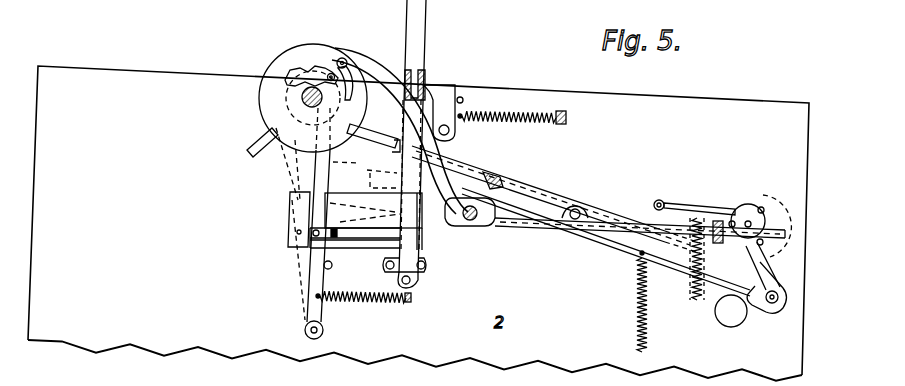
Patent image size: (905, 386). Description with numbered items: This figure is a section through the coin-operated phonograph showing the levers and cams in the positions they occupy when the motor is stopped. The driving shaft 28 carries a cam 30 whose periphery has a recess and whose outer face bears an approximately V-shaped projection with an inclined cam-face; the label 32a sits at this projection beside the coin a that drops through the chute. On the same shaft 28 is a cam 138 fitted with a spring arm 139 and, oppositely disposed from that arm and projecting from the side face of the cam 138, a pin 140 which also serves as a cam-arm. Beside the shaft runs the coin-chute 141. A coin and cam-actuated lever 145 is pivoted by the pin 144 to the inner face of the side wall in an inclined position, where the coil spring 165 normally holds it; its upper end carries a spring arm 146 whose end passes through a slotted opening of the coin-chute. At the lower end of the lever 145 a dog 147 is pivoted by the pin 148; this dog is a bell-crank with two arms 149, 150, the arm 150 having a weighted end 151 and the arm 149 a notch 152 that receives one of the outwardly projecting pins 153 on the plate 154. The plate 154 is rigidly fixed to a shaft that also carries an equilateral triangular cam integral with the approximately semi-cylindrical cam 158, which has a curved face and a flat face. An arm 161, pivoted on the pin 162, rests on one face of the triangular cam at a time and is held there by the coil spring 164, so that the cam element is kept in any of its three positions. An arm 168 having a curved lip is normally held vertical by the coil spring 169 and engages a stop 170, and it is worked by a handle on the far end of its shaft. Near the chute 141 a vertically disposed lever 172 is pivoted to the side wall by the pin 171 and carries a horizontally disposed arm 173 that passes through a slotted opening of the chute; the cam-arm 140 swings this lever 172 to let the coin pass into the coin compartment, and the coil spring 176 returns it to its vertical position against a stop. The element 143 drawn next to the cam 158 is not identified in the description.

The driving shaft 28 is at (303, 96).
The cam 30 is at (299, 154).
The strap 32a is at (400, 82).
The cam 138 is at (290, 80).
The spring arm 139 is at (262, 137).
The pin 140 is at (330, 72).
The coin-chute 141 is at (420, 24).
The rod 143 is at (718, 244).
The pin 144 is at (577, 208).
The coin and cam-actuated lever 145 is at (505, 192).
The spring arm 146 is at (366, 156).
The dog 147 is at (778, 304).
The pin 148 is at (769, 306).
The arm 149 is at (761, 266).
The arm 150 is at (748, 313).
The weighted end 151 is at (727, 313).
The notch 152 is at (766, 244).
The pin 153 is at (783, 216).
The plate 154 is at (763, 207).
The semi-cylindrical cam 158 is at (745, 212).
The arm 161 is at (694, 203).
The pin 162 is at (659, 200).
The coil spring 164 is at (691, 294).
The coil spring 165 is at (637, 300).
The arm 168 is at (463, 99).
The coil spring 169 is at (440, 100).
The stop 170 is at (463, 100).
The pin 171 is at (324, 330).
The lever 172 is at (322, 204).
The arm 173 is at (362, 241).
The coil spring 176 is at (365, 308).